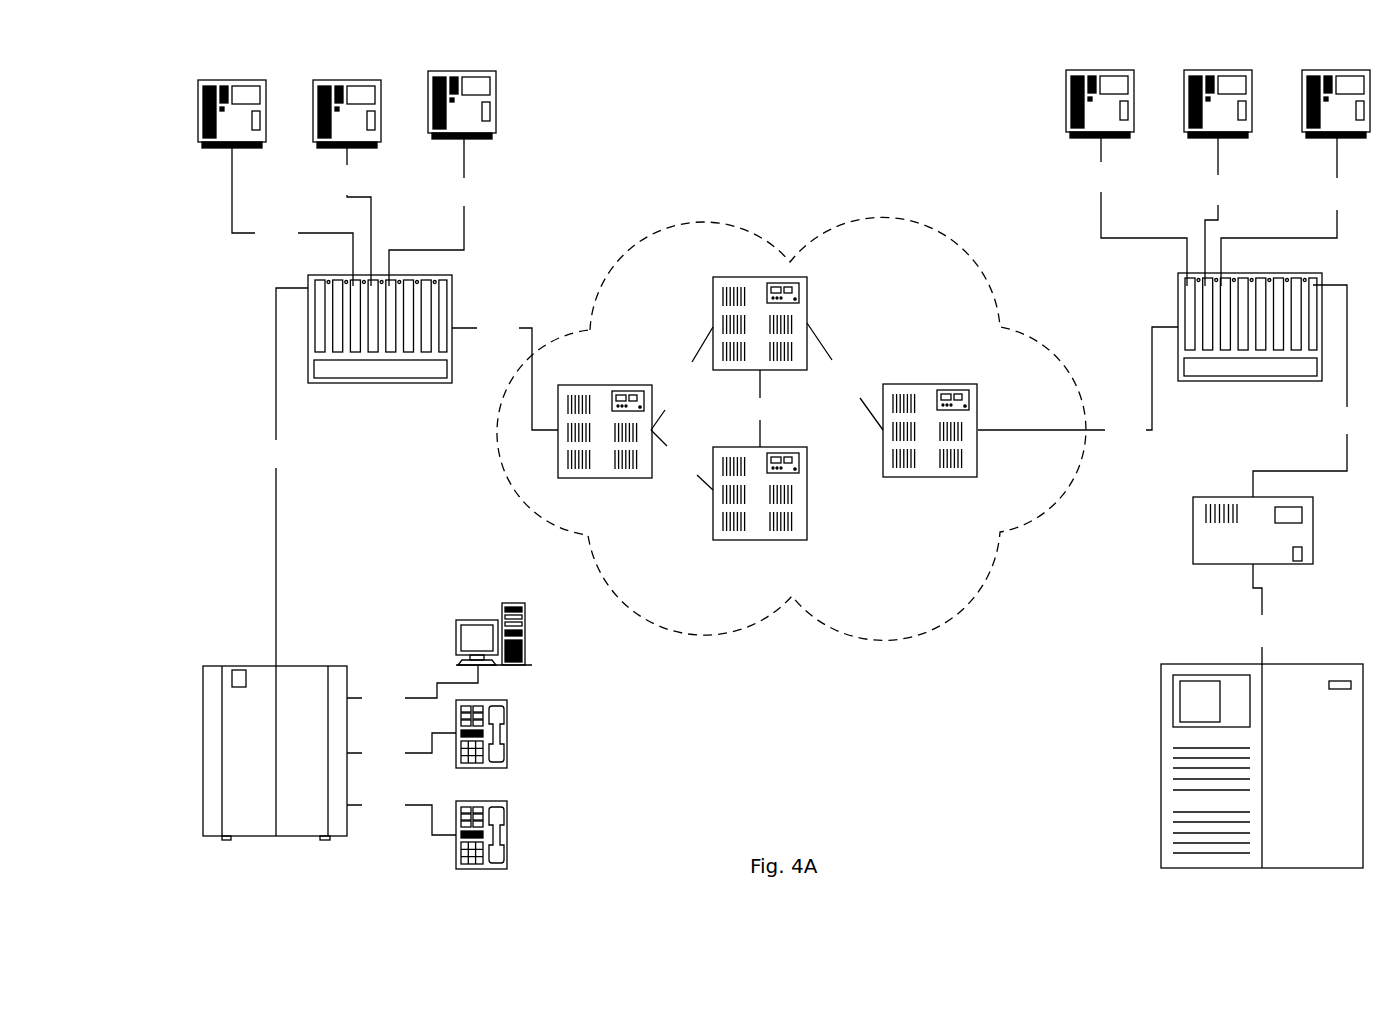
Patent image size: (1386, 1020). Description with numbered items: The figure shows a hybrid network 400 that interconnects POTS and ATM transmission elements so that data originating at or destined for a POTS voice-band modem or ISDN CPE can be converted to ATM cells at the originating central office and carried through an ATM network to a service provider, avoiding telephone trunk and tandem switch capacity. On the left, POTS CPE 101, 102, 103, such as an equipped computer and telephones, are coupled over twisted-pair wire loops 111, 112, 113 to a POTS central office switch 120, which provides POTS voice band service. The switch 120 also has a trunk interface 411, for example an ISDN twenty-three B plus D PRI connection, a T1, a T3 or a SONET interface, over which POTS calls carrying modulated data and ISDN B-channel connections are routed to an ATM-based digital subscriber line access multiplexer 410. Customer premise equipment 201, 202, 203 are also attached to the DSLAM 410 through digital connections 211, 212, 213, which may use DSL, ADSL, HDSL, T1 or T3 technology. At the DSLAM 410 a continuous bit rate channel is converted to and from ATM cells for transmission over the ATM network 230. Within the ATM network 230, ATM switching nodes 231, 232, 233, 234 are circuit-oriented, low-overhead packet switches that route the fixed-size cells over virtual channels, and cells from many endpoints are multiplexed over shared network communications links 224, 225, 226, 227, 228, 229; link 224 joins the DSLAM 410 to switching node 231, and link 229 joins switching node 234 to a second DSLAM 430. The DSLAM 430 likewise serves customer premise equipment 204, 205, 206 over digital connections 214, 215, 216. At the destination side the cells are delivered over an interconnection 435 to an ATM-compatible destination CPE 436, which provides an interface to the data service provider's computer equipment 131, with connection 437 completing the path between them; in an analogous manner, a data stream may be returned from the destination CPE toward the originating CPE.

The hybrid network 400 is at (810, 117).
The POTS customer premise equipment 101 is at (525, 633).
The POTS customer premise equipment 102 is at (507, 731).
The POTS customer premise equipment 103 is at (507, 832).
The twisted-pair wire loop 111 is at (412, 688).
The twisted-pair wire loop 112 is at (401, 750).
The twisted-pair wire loop 113 is at (401, 815).
The POTS central office switch 120 is at (276, 836).
The data service provider's computer equipment 131 is at (1161, 767).
The customer premise equipment 201 is at (233, 80).
The customer premise equipment 202 is at (347, 80).
The customer premise equipment 203 is at (463, 71).
The customer premise equipment 204 is at (1103, 70).
The customer premise equipment 205 is at (1218, 70).
The customer premise equipment 206 is at (1333, 70).
The digital connection 211 is at (292, 217).
The digital connection 212 is at (348, 217).
The digital connection 213 is at (433, 212).
The digital connection 214 is at (1135, 212).
The digital connection 215 is at (1219, 212).
The digital connection 216 is at (1289, 212).
The shared network communications link 224 is at (505, 374).
The shared network communications link 225 is at (682, 378).
The shared network communications link 226 is at (682, 460).
The shared network communications link 227 is at (761, 408).
The shared network communications link 228 is at (845, 376).
The shared network communications link 229 is at (1078, 385).
The ATM network 230 is at (655, 229).
The ATM switching node 231 is at (605, 383).
The ATM switching node 232 is at (713, 282).
The ATM switching node 233 is at (770, 540).
The ATM switching node 234 is at (932, 384).
The ATM-based digital subscriber line access multiplexer 410 is at (380, 384).
The trunk interface 411 is at (283, 562).
The digital subscriber line access multiplexer 430 is at (1250, 380).
The interconnection 435 is at (1310, 391).
The destination CPE 436 is at (1193, 530).
The connection line 437 is at (1263, 614).